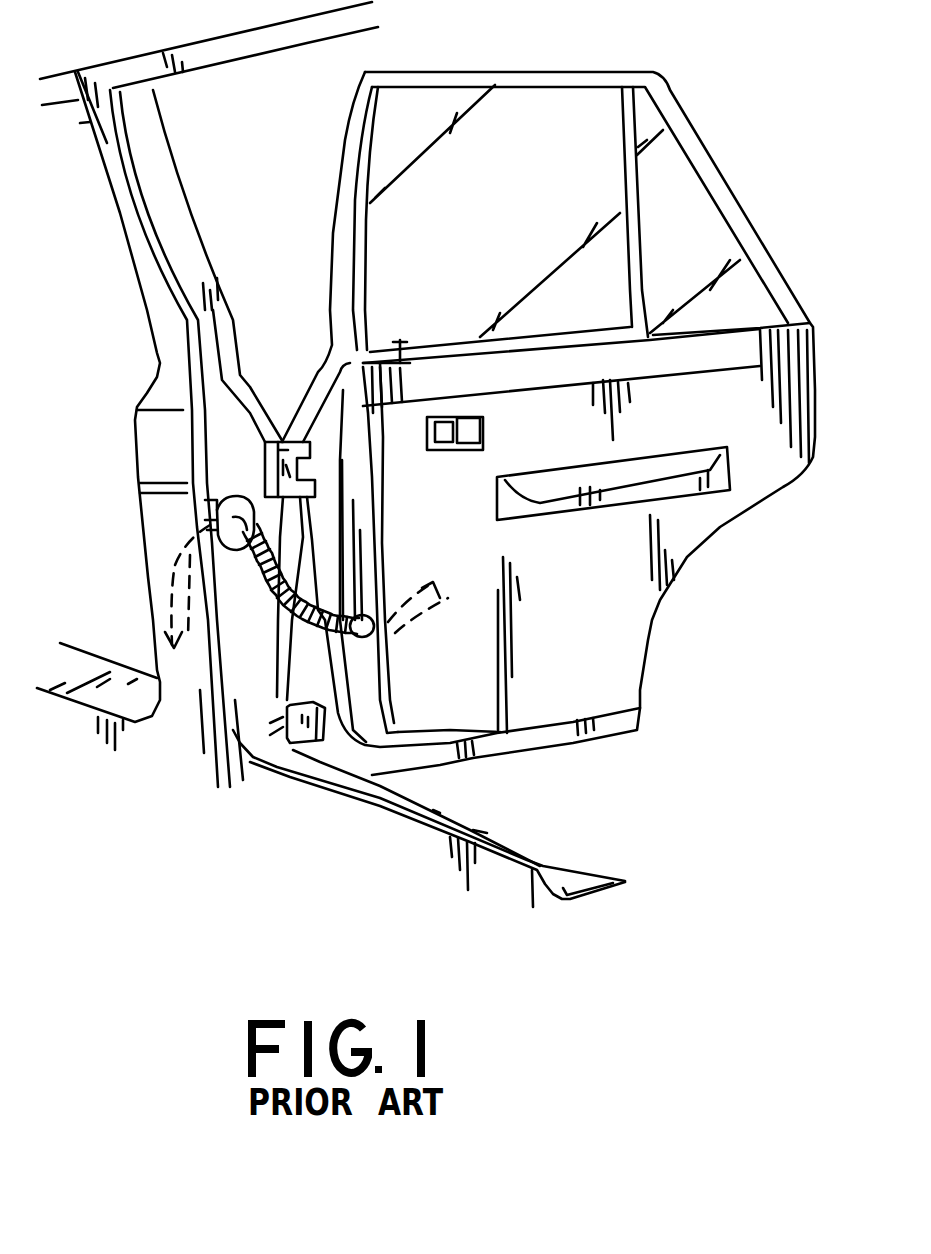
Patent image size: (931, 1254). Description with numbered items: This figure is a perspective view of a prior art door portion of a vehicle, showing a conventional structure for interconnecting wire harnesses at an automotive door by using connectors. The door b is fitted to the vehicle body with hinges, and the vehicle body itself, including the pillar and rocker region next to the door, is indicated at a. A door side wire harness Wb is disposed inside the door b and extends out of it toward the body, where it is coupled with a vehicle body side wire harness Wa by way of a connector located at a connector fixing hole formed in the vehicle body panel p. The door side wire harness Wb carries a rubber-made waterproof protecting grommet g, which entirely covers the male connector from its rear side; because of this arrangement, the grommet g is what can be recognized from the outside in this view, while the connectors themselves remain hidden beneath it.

The vehicle body a is at (188, 663).
The door b is at (780, 443).
The waterproof protecting grommet g is at (237, 490).
The vehicle body panel p is at (210, 500).
The vehicle body side wire harness Wa is at (153, 573).
The door side wire harness Wb is at (350, 606).